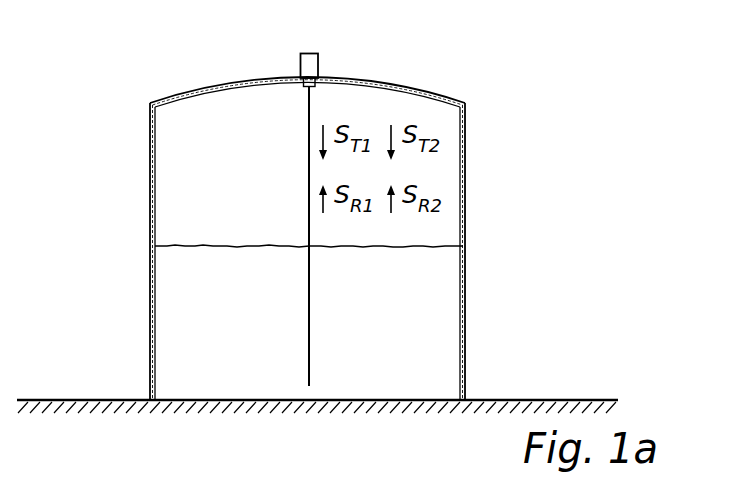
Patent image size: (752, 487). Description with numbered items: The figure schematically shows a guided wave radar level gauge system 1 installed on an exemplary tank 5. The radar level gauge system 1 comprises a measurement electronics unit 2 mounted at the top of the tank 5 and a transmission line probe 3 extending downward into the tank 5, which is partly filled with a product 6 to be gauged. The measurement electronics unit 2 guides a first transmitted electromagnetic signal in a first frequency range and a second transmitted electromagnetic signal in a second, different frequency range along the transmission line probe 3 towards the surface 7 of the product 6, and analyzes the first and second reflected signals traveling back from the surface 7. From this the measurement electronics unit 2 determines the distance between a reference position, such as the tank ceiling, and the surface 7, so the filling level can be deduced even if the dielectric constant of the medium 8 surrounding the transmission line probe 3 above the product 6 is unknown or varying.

The radar level gauge system 1 is at (325, 50).
The measurement electronics unit 2 is at (300, 63).
The transmission line probe 3 is at (310, 117).
The tank 5 is at (465, 135).
The product 6 is at (443, 313).
The surface 7 is at (445, 245).
The medium 8 is at (231, 181).